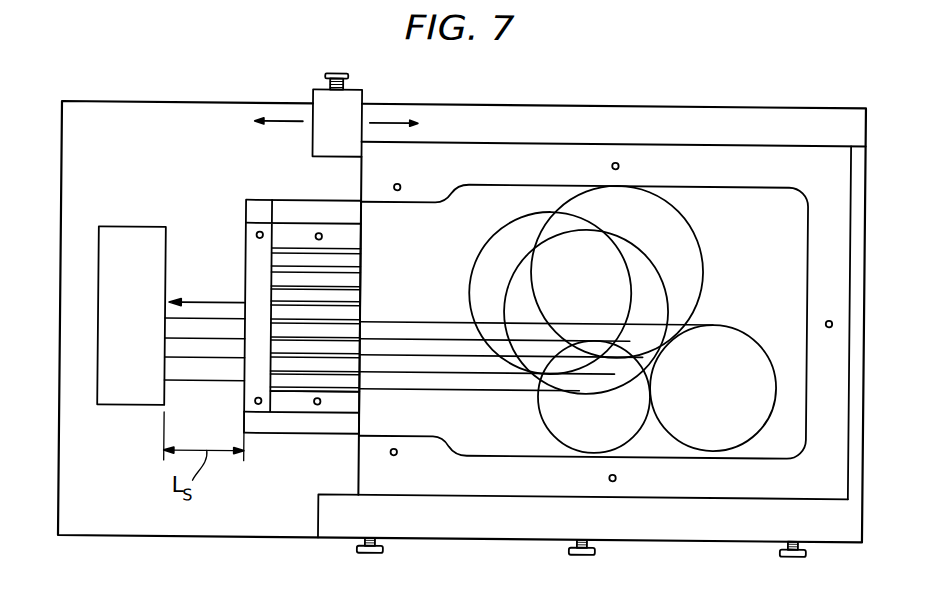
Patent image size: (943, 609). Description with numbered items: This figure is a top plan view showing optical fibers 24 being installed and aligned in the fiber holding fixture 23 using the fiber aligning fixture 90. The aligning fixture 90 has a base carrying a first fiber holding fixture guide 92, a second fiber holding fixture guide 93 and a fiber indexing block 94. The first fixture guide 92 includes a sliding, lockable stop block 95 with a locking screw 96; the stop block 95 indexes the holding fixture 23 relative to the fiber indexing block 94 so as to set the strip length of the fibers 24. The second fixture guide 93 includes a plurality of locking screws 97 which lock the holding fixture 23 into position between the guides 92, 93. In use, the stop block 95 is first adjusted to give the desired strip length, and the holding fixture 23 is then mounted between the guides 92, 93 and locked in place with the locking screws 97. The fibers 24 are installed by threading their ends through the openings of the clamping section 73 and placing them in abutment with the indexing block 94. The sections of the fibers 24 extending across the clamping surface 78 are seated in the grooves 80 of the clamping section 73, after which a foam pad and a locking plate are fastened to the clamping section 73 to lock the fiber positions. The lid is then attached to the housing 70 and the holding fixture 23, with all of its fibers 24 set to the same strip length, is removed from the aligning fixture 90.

The fiber aligning fixture 90 is at (286, 78).
The first fiber holding fixture guide 92 is at (803, 115).
The fiber holding fixture 23 is at (854, 219).
The stop block 95 is at (365, 95).
The locking screw 96 is at (332, 70).
The housing 70 is at (830, 296).
The clamping section 73 is at (289, 198).
The clamping surface 78 is at (339, 229).
The grooves 80 is at (356, 262).
The optical fibers 24 is at (392, 334).
The fiber indexing block 94 is at (99, 277).
The second fiber holding fixture guide 93 is at (842, 523).
The locking screws 97 is at (374, 551).